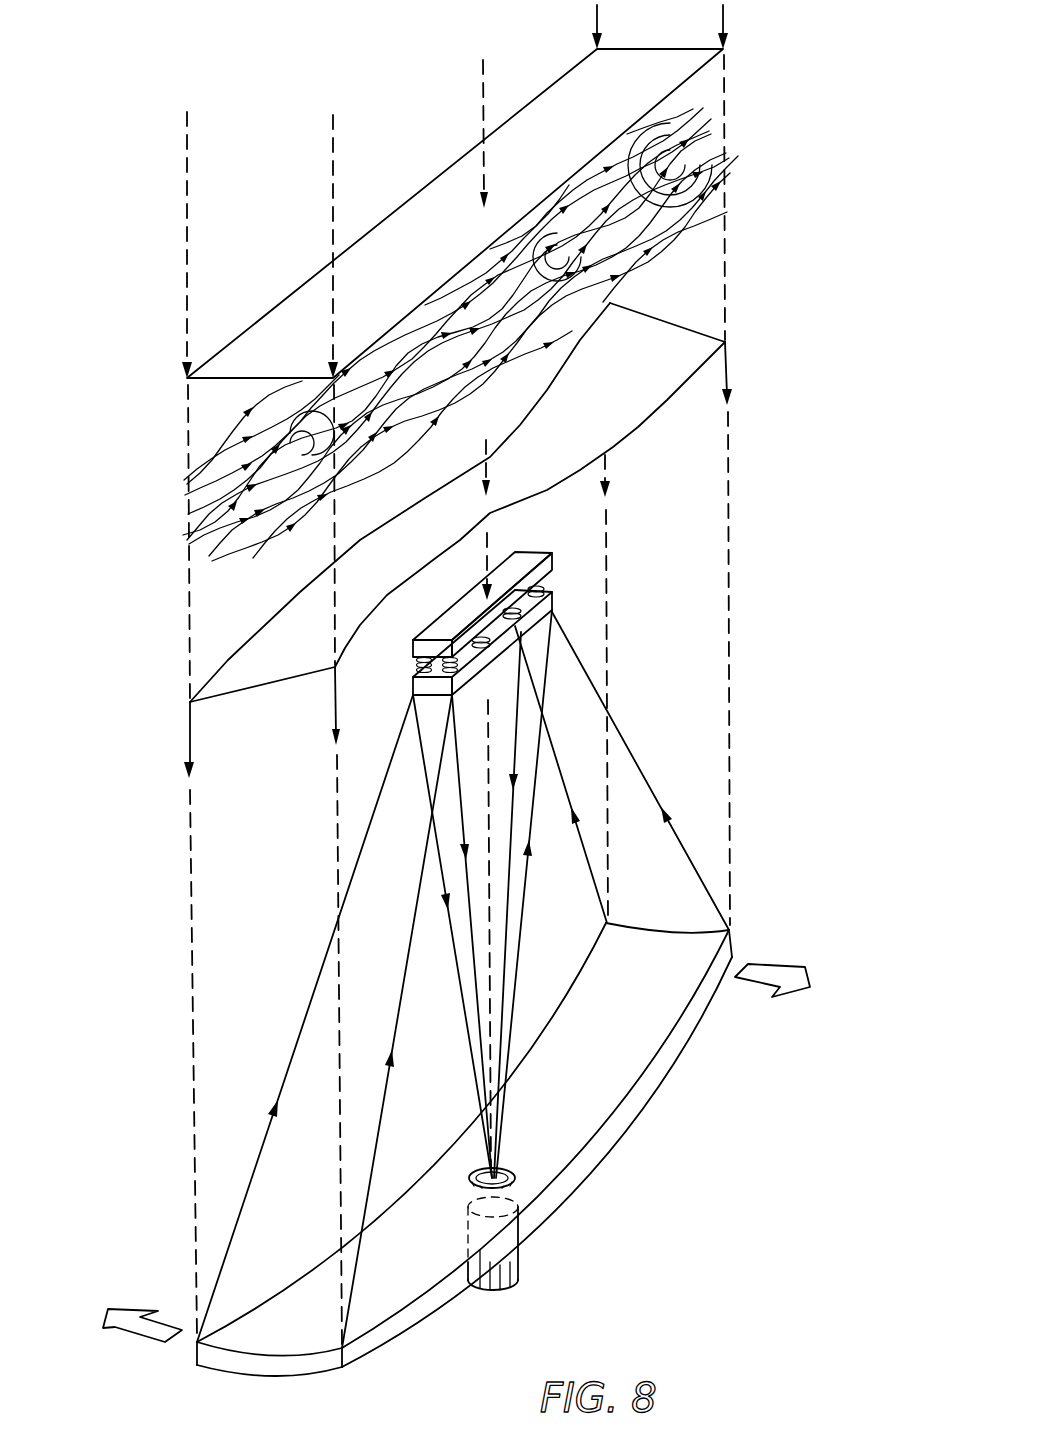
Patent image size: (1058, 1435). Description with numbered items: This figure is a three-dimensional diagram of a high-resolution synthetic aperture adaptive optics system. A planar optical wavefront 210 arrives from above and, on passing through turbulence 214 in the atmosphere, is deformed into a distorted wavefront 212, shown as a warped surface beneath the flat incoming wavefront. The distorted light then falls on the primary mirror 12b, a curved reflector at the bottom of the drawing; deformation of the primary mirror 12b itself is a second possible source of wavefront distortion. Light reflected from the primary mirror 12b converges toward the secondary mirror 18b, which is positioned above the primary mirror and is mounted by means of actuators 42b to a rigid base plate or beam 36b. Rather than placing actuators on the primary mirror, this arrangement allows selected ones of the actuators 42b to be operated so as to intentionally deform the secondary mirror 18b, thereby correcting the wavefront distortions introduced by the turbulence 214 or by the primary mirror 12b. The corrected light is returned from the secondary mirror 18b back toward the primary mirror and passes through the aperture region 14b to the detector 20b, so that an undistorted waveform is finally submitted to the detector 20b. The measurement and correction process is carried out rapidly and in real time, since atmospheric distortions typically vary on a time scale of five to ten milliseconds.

The planar optical wavefront 210 is at (252, 347).
The turbulence 214 is at (177, 518).
The distorted wavefront 212 is at (240, 670).
The rigid base plate or beam 36b is at (552, 583).
The actuators 42b is at (552, 588).
The secondary mirror 18b is at (552, 600).
The primary mirror 12b is at (600, 1092).
The light source aperture 14b is at (517, 1172).
The detector 20b is at (522, 1265).